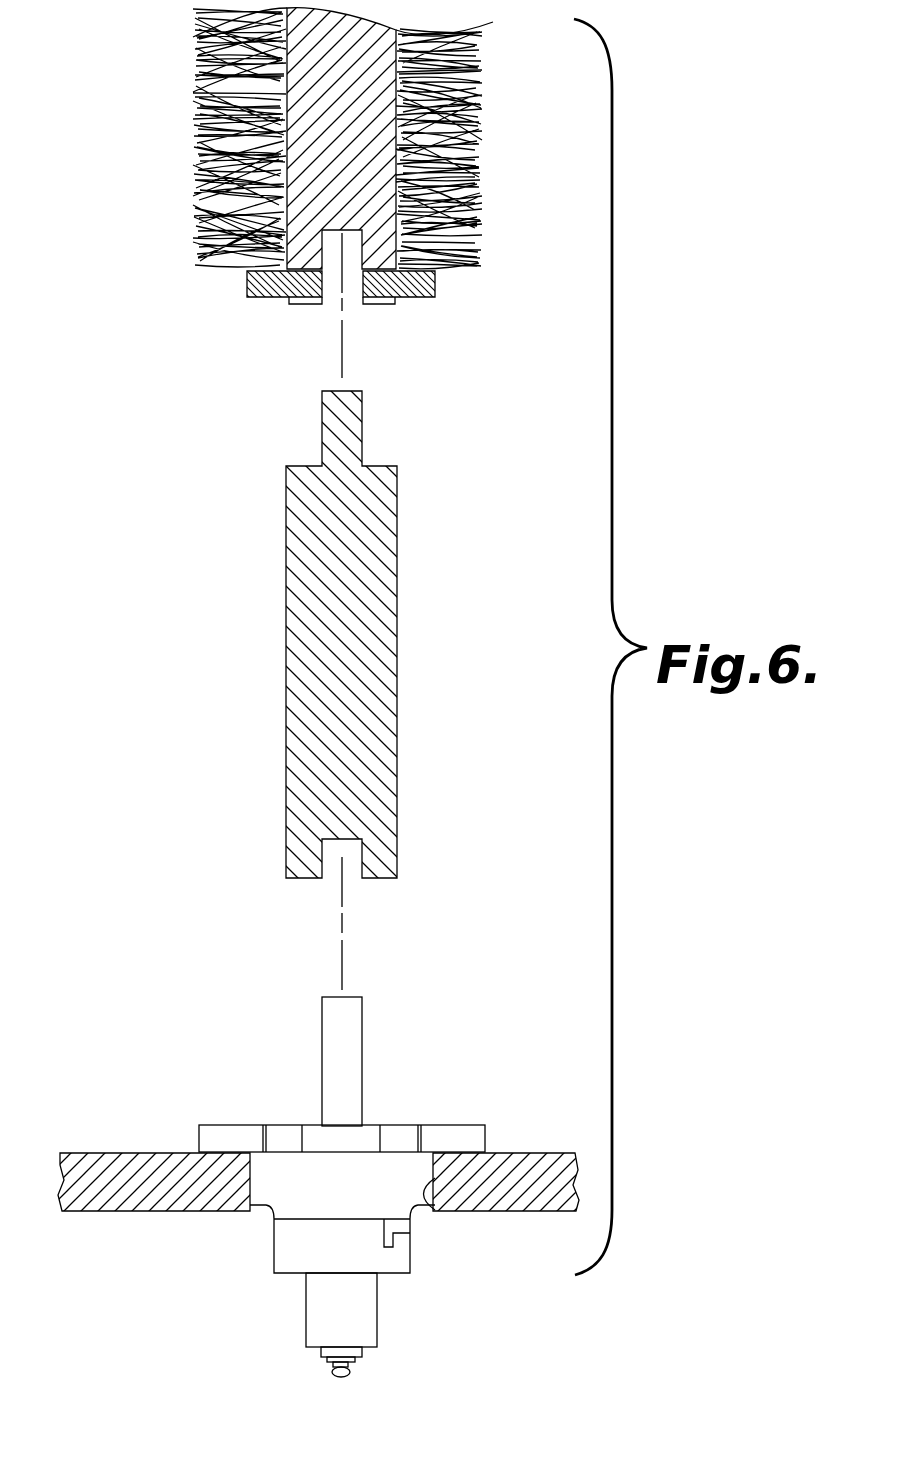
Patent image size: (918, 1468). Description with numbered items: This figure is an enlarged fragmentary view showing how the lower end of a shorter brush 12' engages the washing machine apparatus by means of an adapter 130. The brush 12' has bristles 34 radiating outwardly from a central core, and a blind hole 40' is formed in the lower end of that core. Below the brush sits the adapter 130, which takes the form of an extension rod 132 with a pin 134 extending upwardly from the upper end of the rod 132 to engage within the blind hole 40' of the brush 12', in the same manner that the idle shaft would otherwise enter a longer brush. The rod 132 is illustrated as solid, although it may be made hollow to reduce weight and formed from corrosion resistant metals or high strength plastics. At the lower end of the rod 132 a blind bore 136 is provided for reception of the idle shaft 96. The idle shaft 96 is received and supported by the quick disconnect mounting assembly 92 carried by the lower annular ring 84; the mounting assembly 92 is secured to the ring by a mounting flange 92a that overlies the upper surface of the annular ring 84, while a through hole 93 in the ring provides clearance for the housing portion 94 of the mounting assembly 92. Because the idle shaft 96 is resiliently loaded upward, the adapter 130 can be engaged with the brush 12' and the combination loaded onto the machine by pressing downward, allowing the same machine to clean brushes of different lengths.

The brush 12' is at (315, 193).
The bristles 34 is at (483, 155).
The blind hole 40' is at (284, 193).
The adapter 130 is at (351, 690).
The extension rod 132 is at (286, 652).
The pin 134 is at (362, 425).
The blind bore 136 is at (362, 842).
The idle shaft 96 is at (355, 1083).
The mounting flange 92a is at (482, 1125).
The lower annular ring 84 is at (112, 1155).
The housing portion 94 is at (293, 1197).
The through hole 93 is at (427, 1210).
The mounting assembly 92 is at (317, 1187).